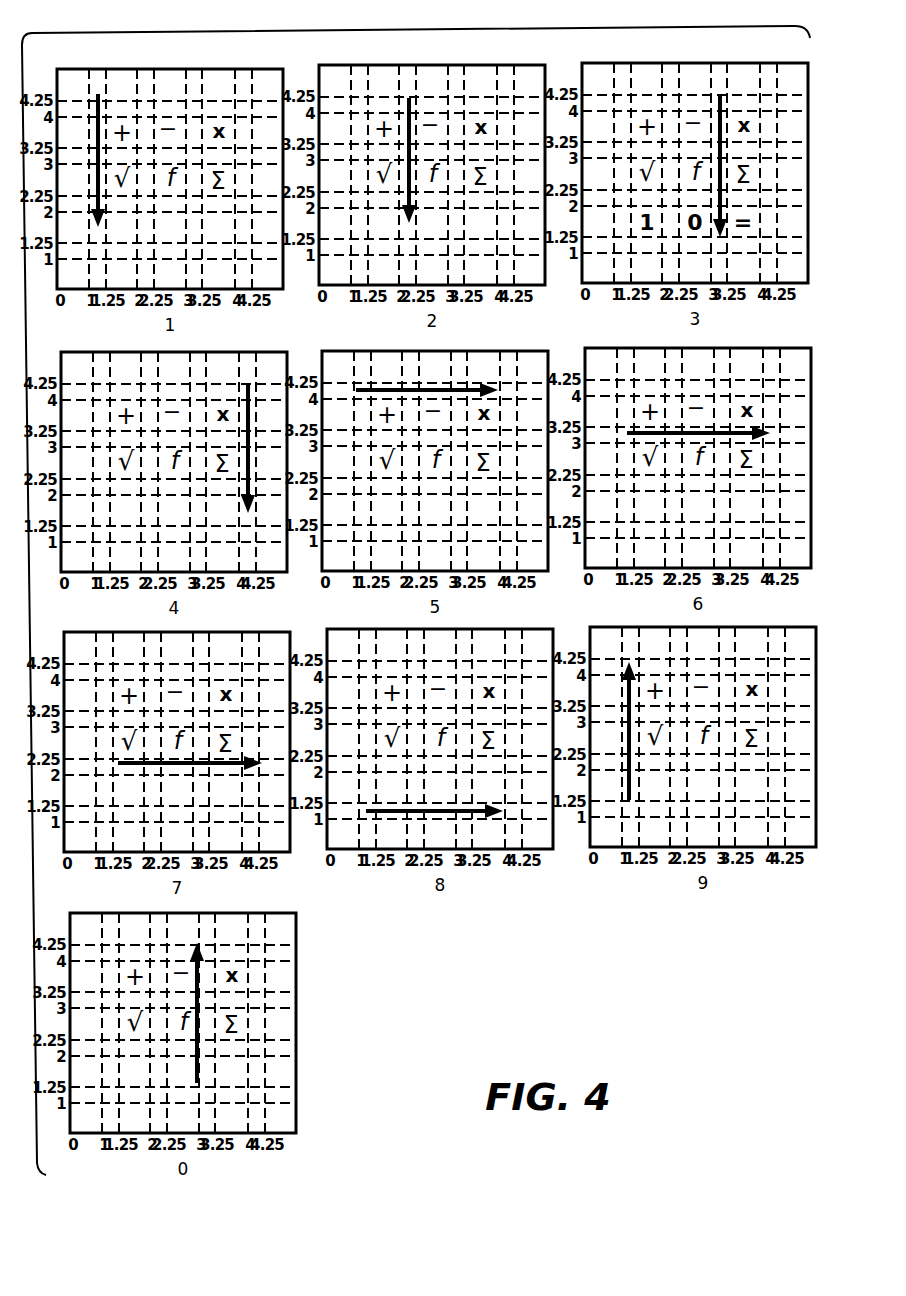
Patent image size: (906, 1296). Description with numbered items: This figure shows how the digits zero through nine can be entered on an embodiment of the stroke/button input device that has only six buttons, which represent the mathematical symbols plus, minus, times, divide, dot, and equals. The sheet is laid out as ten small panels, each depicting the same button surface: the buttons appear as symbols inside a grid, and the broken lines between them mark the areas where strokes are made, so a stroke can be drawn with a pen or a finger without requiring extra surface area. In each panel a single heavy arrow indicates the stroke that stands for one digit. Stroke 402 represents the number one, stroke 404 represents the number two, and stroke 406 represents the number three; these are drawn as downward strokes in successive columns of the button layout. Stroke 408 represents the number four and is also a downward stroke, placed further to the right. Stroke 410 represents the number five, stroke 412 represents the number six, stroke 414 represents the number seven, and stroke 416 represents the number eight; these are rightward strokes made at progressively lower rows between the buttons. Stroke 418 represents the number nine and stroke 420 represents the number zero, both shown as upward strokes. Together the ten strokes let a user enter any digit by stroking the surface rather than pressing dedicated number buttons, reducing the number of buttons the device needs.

The stroke 402 is at (98, 108).
The stroke 404 is at (409, 104).
The stroke 406 is at (720, 102).
The stroke 408 is at (248, 408).
The stroke 410 is at (356, 389).
The stroke 412 is at (673, 432).
The stroke 414 is at (198, 760).
The stroke 416 is at (418, 805).
The stroke 418 is at (621, 695).
The stroke 420 is at (200, 990).